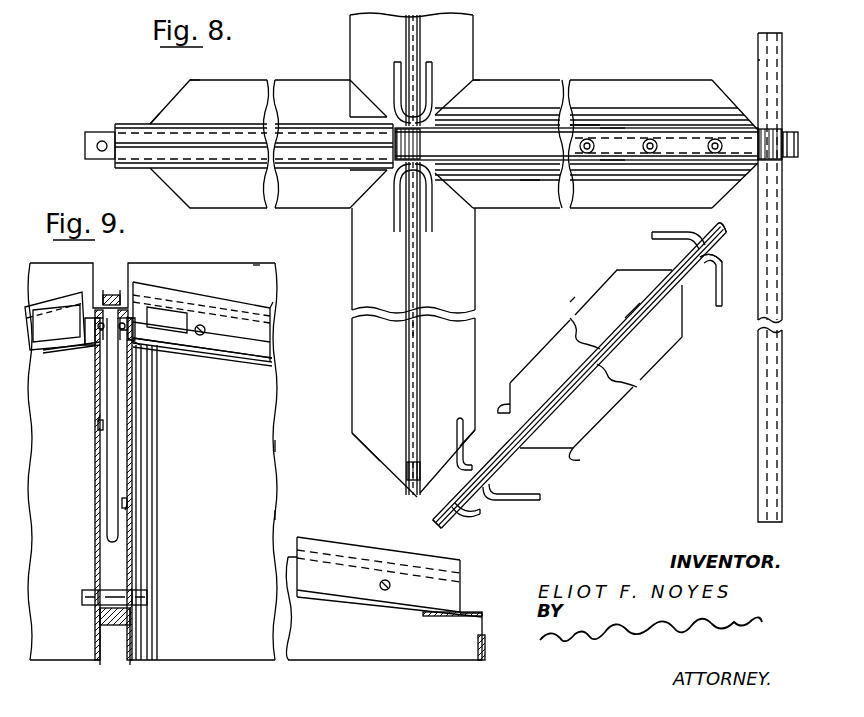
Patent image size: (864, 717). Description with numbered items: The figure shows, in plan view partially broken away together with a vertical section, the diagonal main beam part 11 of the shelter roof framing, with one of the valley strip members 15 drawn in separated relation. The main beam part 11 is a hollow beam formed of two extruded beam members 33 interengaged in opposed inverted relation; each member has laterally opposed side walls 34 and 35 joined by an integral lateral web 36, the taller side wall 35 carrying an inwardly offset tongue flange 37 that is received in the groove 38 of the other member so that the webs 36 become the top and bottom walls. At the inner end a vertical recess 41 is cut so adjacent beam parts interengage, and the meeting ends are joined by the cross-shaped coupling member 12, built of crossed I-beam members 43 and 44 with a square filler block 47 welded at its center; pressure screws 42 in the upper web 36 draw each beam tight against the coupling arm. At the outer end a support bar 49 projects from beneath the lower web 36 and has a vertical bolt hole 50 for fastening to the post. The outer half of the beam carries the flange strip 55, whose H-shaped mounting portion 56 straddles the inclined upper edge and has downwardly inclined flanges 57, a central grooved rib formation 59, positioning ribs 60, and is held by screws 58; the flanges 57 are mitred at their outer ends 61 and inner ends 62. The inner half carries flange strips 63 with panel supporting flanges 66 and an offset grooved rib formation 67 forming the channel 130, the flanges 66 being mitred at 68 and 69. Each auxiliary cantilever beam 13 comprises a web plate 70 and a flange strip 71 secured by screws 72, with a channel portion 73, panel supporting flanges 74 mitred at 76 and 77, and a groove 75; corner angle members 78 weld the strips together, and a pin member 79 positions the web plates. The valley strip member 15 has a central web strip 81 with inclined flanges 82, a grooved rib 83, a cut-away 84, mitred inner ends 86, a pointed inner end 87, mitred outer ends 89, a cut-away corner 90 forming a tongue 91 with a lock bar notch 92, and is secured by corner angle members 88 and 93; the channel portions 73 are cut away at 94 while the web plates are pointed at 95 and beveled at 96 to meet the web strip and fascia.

In FIG. 8, the diagonal main beam part 11 is at (156, 91).
In FIG. 9, the diagonal main beam part 11 is at (72, 509).
In FIG. 8, the cross-shaped hub insert or coupling member 12 is at (748, 60).
In FIG. 8, the auxiliary cantilever beam 13 is at (340, 290).
In FIG. 9, the auxiliary cantilever beam 13 is at (286, 514).
In FIG. 8, the valley strip member 15 is at (569, 296).
In FIG. 9, the valley strip member 15 is at (279, 303).
In FIG. 9, the extruded beam member 33 is at (88, 546).
In FIG. 8, the side wall 34 is at (613, 128).
In FIG. 9, the side wall 34 is at (132, 560).
In FIG. 8, the side wall 35 is at (612, 160).
In FIG. 9, the side wall 35 is at (98, 568).
In FIG. 8, the lateral web 36 is at (505, 140).
In FIG. 9, the lateral web 36 is at (118, 625).
In FIG. 9, the tongue flange 37 is at (132, 502).
In FIG. 9, the groove 38 is at (133, 512).
In FIG. 8, the vertical recess 41 is at (757, 128).
In FIG. 8, the pressure screw 42 is at (713, 140).
In FIG. 9, the pressure screw 42 is at (107, 293).
In FIG. 8, the I-beam member 43 is at (793, 127).
In FIG. 9, the I-beam member 43 is at (112, 473).
In FIG. 8, the I-beam member 44 is at (767, 33).
In FIG. 8, the square filler block 47 is at (750, 185).
In FIG. 8, the support bar 49 is at (106, 133).
In FIG. 8, the vertical bolt hole 50 is at (97, 146).
In FIG. 8, the flange strip 55 is at (248, 66).
In FIG. 9, the flange strip 55 is at (88, 302).
In FIG. 8, the intermediate mounting portion 56 is at (213, 125).
In FIG. 9, the intermediate mounting portion 56 is at (132, 307).
In FIG. 8, the outwardly extending flange 57 is at (290, 203).
In FIG. 9, the outwardly extending flange 57 is at (150, 342).
In FIG. 9, the screw 58 is at (133, 342).
In FIG. 8, the grooved rib formation 59 is at (302, 141).
In FIG. 9, the grooved rib formation 59 is at (115, 340).
In FIG. 9, the positioning rib 60 is at (127, 362).
In FIG. 8, the mitred outer end 61 is at (168, 190).
In FIG. 8, the mitred inner end 62 is at (380, 178).
In FIG. 8, the flange strip 63 is at (557, 66).
In FIG. 8, the panel supporting flange 66 is at (580, 208).
In FIG. 8, the grooved rib formation 67 is at (643, 180).
In FIG. 8, the mitred outer end 68 is at (452, 197).
In FIG. 8, the mitred inner end 69 is at (722, 192).
In FIG. 8, the web plate member 70 is at (423, 358).
In FIG. 9, the web plate member 70 is at (270, 446).
In FIG. 8, the flange strip 71 is at (357, 536).
In FIG. 9, the flange strip 71 is at (264, 297).
In FIG. 8, the screw 72 is at (391, 585).
In FIG. 9, the screw 72 is at (206, 330).
In FIG. 8, the intermediate channel portion 73 is at (333, 582).
In FIG. 9, the intermediate channel portion 73 is at (265, 340).
In FIG. 8, the panel supporting flange 74 is at (360, 607).
In FIG. 9, the panel supporting flange 74 is at (250, 357).
In FIG. 8, the longitudinal groove 75 is at (380, 557).
In FIG. 8, the mitred inner end 76 is at (428, 215).
In FIG. 8, the mitred outer end 77 is at (437, 617).
In FIG. 8, the corner angle member 78 is at (428, 228).
In FIG. 9, the corner angle member 78 is at (173, 317).
In FIG. 9, the pin member 79 is at (147, 595).
In FIG. 8, the central web strip 81 is at (570, 376).
In FIG. 8, the panel supporting flange 82 is at (620, 400).
In FIG. 8, the grooved rib formation 83 is at (630, 317).
In FIG. 8, the cut-away 84 is at (713, 256).
In FIG. 8, the mitred inner end 86 is at (682, 330).
In FIG. 8, the pointed inner end 87 is at (722, 228).
In FIG. 8, the corner angle member 88 is at (722, 292).
In FIG. 8, the mitred outer end 89 is at (578, 458).
In FIG. 8, the cut-away upper corner 90 is at (466, 512).
In FIG. 8, the projecting tongue 91 is at (445, 522).
In FIG. 8, the notch 92 is at (478, 516).
In FIG. 8, the corner angle member 93 is at (538, 494).
In FIG. 8, the cut-away 94 is at (460, 597).
In FIG. 8, the pointed end edge 95 is at (483, 623).
In FIG. 8, the beveled edge 96 is at (485, 653).
In FIG. 8, the channel 130 is at (592, 120).